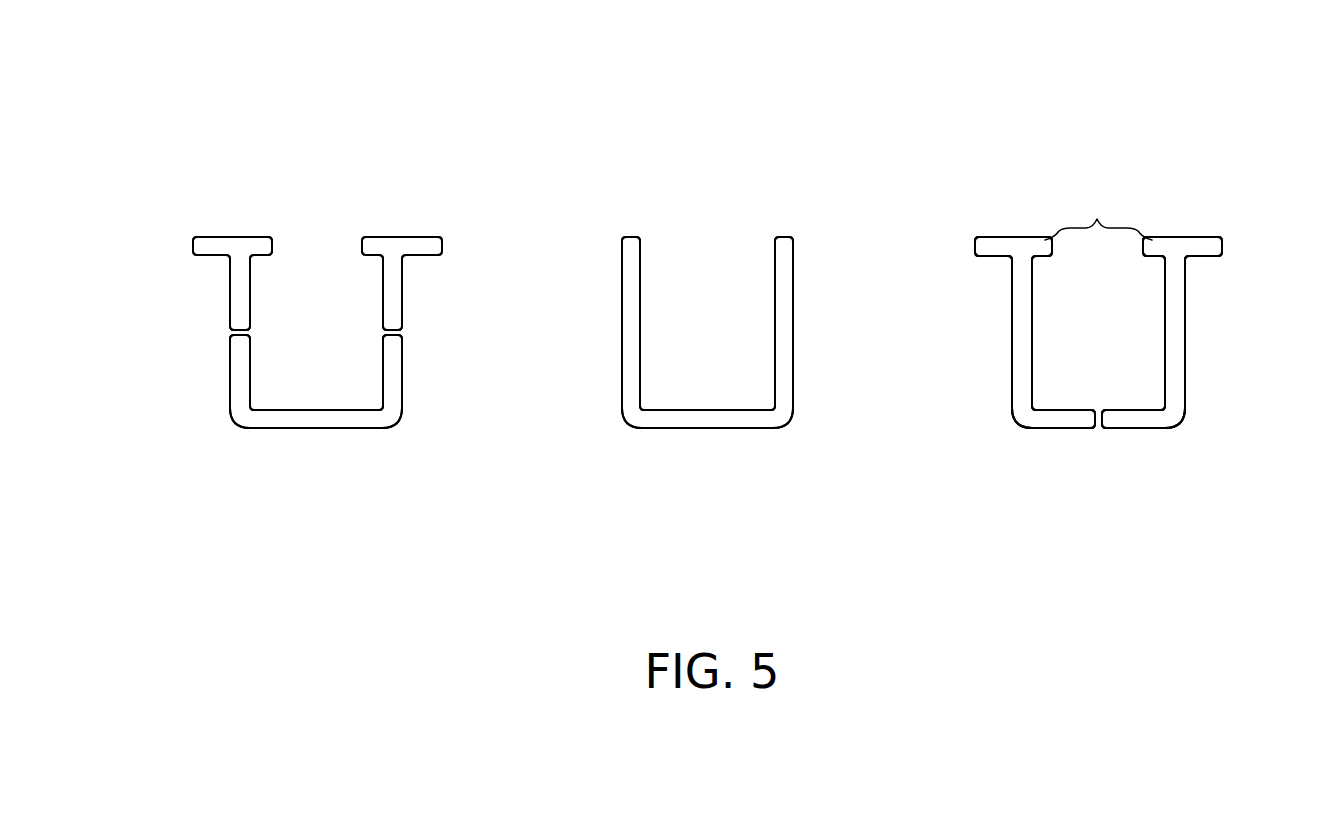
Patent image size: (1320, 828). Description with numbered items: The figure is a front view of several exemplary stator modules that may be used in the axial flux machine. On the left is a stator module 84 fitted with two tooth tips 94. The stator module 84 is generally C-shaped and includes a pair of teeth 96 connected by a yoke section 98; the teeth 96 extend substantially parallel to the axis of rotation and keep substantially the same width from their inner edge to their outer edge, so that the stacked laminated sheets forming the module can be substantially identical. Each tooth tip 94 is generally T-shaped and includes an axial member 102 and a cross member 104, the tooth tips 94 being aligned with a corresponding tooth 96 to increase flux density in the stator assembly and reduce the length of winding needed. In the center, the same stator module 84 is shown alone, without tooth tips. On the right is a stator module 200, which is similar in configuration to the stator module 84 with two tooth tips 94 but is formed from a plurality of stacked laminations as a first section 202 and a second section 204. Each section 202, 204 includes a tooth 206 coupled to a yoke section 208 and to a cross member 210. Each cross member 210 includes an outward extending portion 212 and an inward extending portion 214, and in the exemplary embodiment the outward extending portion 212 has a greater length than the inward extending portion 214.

The stator module 84 is at (200, 470).
The tooth tip 94 is at (206, 144).
The tooth 96 is at (242, 368).
The yoke section 98 is at (312, 418).
The axial member 102 is at (242, 292).
The cross member 104 is at (222, 246).
The stator module 200 is at (1156, 122).
The first section 202 is at (1000, 457).
The second section 204 is at (1196, 457).
The tooth 206 is at (1018, 315).
The yoke section 208 is at (1063, 420).
The cross member 210 is at (1020, 245).
The outward extending portion 212 is at (975, 243).
The inward extending portion 214 is at (1098, 214).